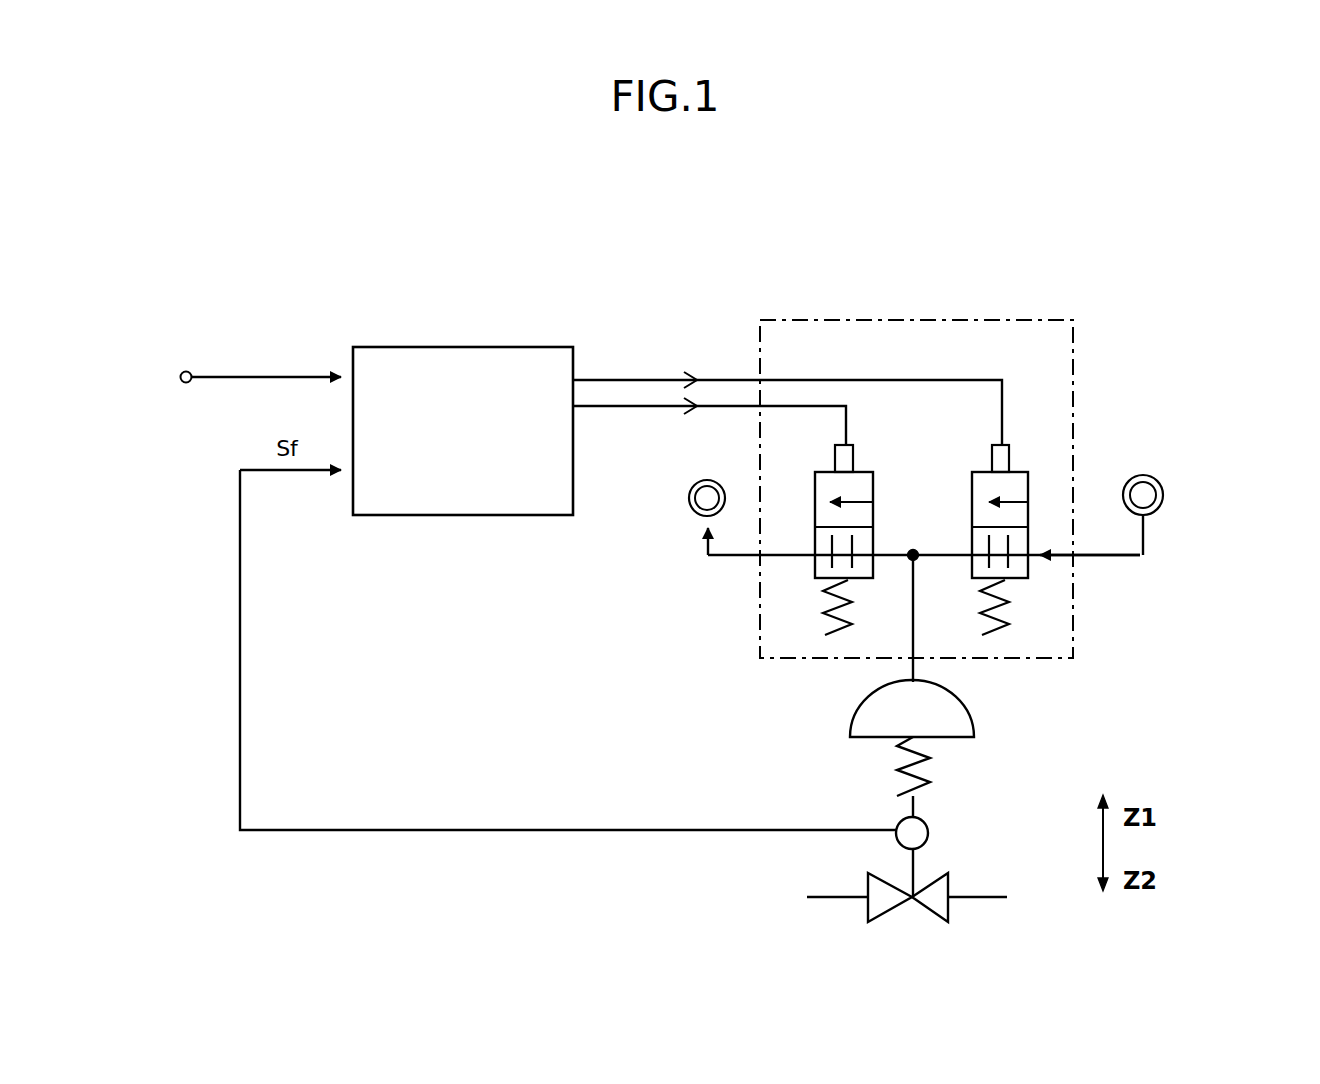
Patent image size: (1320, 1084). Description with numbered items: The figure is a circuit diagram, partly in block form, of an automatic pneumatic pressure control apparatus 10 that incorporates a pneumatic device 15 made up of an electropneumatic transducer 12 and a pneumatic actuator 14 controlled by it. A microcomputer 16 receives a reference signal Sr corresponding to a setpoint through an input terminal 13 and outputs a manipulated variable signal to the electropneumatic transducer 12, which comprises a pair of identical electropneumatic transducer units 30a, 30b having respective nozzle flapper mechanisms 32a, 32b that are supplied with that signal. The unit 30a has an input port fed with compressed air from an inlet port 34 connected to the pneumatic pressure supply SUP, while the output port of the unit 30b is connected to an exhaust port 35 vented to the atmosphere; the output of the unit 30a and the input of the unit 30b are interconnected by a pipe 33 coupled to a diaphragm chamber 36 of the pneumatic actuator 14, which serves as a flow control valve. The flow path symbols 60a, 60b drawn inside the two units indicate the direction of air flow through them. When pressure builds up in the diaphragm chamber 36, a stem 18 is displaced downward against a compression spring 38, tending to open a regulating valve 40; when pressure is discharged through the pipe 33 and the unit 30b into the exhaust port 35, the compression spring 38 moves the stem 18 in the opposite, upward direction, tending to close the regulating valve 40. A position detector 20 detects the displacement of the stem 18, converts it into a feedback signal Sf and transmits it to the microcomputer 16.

The automatic pneumatic pressure control apparatus 10 is at (703, 239).
The electropneumatic transducer 12 is at (1072, 628).
The input terminal 13 is at (181, 381).
The pneumatic actuator 14 is at (1010, 767).
The pneumatic device 15 is at (1179, 704).
The microcomputer 16 is at (495, 347).
The stem 18 is at (915, 870).
The position detector 20 is at (895, 842).
The electropneumatic transducer unit 30a is at (1019, 525).
The electropneumatic transducer unit 30b is at (832, 545).
The nozzle flapper mechanism 32a is at (990, 457).
The nozzle flapper mechanism 32b is at (858, 452).
The pipe 33 is at (917, 615).
The inlet port 34 is at (1163, 495).
The exhaust port 35 is at (690, 511).
The diaphragm chamber 36 is at (867, 727).
The compression spring 38 is at (936, 764).
The regulating valve 40 is at (890, 915).
The flow path of supply valve 60a is at (962, 514).
The flow path of exhaust valve 60b is at (878, 502).